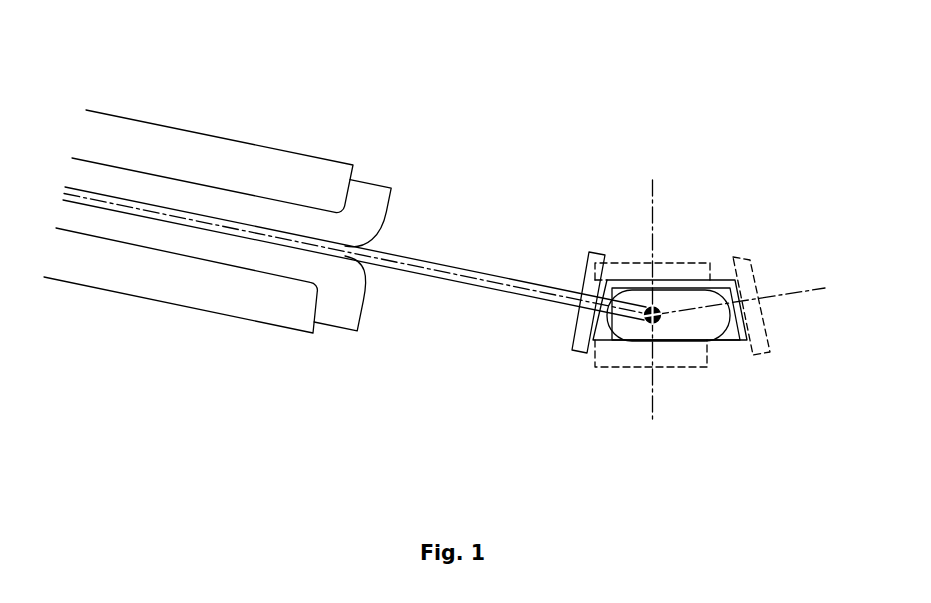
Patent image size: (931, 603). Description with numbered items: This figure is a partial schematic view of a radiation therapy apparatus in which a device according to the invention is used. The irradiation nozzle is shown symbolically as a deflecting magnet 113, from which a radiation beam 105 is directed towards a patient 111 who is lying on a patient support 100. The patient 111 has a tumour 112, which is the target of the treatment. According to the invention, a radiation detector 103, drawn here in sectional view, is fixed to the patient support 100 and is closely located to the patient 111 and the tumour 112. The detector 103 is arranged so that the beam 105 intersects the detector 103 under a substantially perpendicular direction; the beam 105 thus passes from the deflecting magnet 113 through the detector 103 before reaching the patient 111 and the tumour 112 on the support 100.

The patient support 100 is at (637, 342).
The radiation detector 103 is at (603, 252).
The radiation beam 105 is at (413, 258).
The patient 111 is at (735, 342).
The tumour 112 is at (665, 325).
The deflecting magnet 113 is at (187, 155).